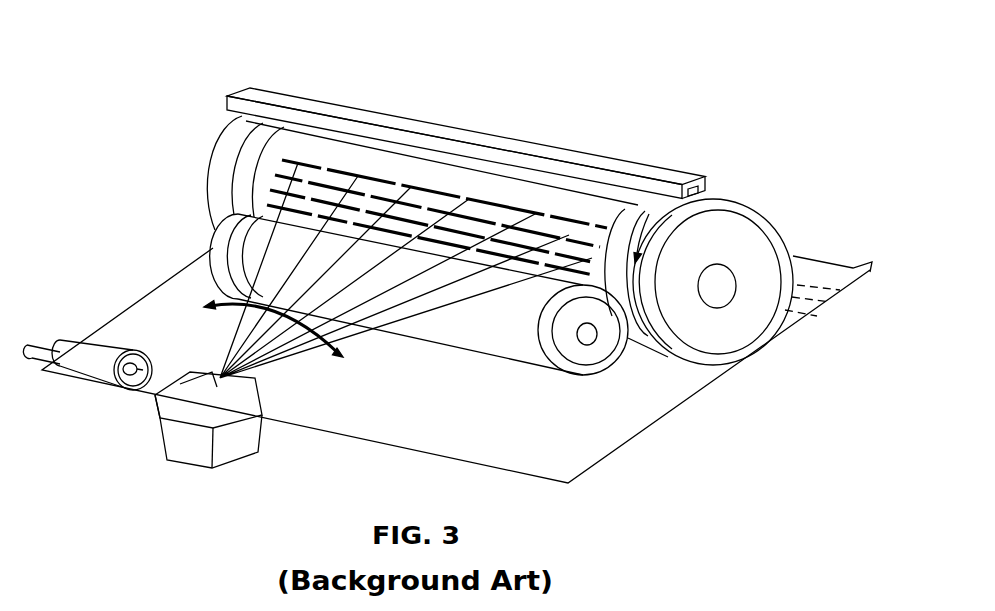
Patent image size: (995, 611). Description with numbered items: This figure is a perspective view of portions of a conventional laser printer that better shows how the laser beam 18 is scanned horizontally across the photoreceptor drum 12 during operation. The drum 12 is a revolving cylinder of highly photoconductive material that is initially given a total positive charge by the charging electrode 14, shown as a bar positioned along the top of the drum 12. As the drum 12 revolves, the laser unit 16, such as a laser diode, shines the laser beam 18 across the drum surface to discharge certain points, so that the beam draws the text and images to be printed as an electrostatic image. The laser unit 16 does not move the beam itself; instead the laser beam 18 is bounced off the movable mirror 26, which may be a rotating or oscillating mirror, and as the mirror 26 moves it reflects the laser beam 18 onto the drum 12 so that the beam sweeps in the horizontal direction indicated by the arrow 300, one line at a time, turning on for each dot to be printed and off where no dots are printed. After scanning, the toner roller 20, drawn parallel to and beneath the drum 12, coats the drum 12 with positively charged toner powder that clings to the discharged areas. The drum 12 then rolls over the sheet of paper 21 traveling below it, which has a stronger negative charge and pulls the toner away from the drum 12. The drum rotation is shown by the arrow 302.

The photoreceptor drum 12 is at (208, 144).
The charging electrode 14 is at (389, 110).
The laser unit 16 is at (78, 342).
The laser beam 18 is at (165, 375).
The toner roller 20 is at (205, 241).
The sheet of paper 21 is at (823, 275).
The movable mirror 26 is at (190, 465).
The arrow 300 is at (327, 353).
The drum rotation direction 302 is at (630, 213).